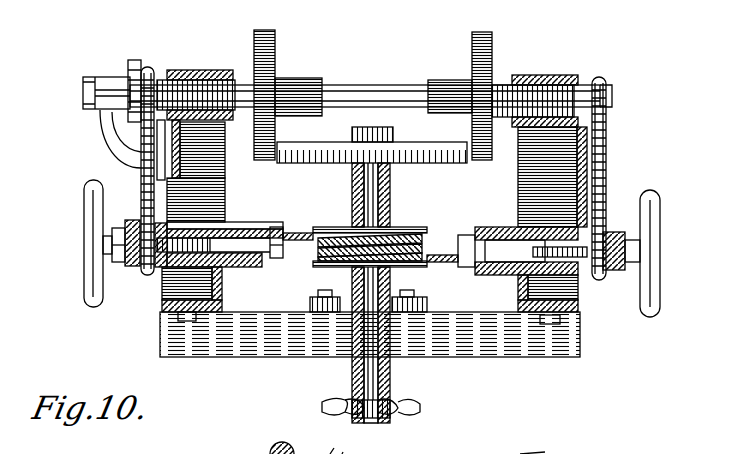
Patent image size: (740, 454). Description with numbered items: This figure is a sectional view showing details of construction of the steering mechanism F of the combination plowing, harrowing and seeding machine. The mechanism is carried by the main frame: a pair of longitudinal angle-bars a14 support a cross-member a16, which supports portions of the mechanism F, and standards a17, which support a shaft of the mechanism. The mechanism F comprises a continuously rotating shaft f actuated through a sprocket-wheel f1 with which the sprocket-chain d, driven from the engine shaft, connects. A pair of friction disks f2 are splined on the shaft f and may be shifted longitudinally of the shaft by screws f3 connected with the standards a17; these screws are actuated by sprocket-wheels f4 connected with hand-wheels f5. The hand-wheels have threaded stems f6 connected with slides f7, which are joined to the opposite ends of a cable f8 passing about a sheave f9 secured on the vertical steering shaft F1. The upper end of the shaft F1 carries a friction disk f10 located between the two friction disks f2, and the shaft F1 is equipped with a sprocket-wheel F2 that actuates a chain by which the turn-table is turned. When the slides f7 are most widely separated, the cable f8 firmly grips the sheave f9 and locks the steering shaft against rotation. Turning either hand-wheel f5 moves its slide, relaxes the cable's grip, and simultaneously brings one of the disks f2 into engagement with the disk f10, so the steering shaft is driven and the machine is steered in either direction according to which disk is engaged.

The continuously rotating shaft f is at (349, 88).
The sprocket-wheel f1 is at (134, 72).
The sprocket-chain d is at (138, 62).
The friction disks f2 is at (277, 58).
The screws f3 is at (180, 76).
The sprocket-wheels f4 is at (141, 191).
The hand-wheels f5 is at (86, 254).
The threaded stems f6 is at (525, 272).
The slides f7 is at (278, 258).
The cable f8 is at (452, 264).
The sheave f9 is at (410, 228).
The friction disk f10 is at (330, 165).
The longitudinal angle-bars a14 is at (226, 294).
The cross-member a16 is at (538, 356).
The standards a17 is at (226, 201).
The steering mechanism F is at (635, 122).
The vertical shaft F1 is at (392, 378).
The sprocket-wheel F2 is at (421, 410).